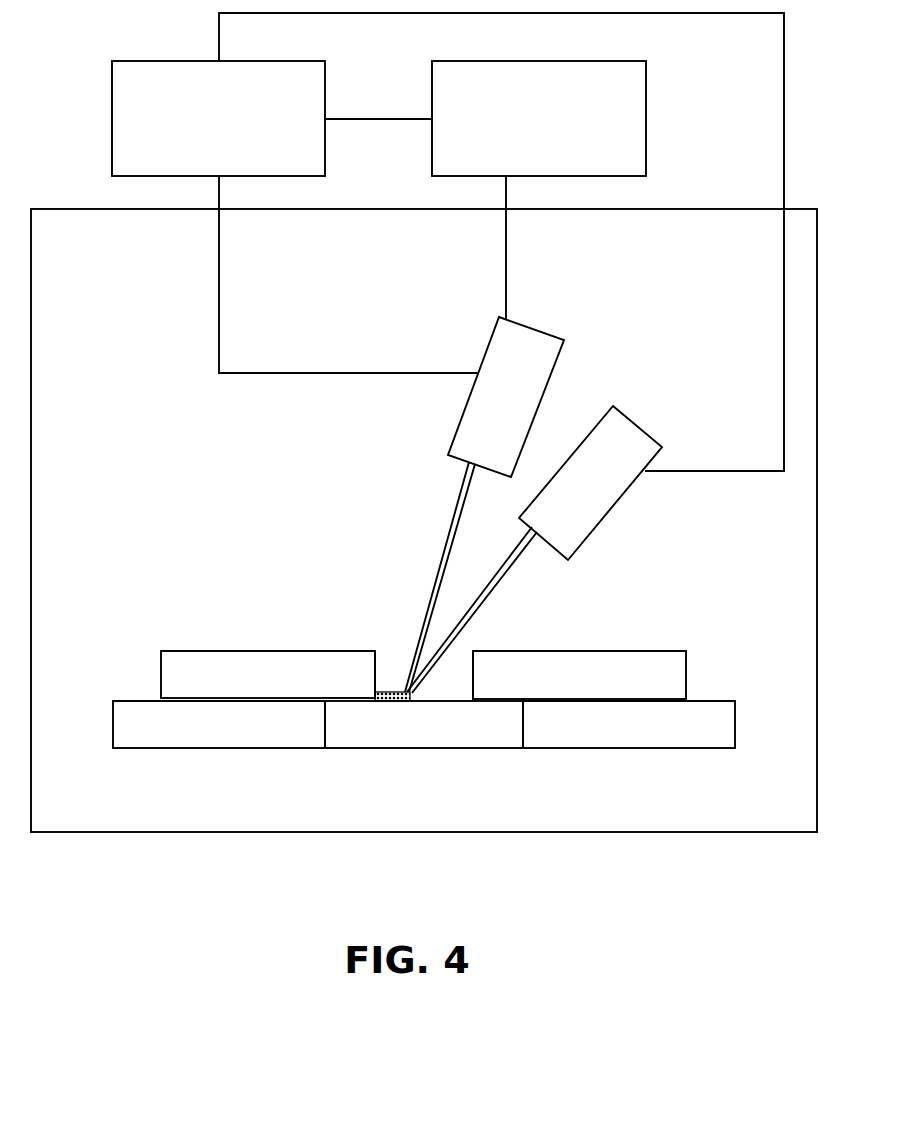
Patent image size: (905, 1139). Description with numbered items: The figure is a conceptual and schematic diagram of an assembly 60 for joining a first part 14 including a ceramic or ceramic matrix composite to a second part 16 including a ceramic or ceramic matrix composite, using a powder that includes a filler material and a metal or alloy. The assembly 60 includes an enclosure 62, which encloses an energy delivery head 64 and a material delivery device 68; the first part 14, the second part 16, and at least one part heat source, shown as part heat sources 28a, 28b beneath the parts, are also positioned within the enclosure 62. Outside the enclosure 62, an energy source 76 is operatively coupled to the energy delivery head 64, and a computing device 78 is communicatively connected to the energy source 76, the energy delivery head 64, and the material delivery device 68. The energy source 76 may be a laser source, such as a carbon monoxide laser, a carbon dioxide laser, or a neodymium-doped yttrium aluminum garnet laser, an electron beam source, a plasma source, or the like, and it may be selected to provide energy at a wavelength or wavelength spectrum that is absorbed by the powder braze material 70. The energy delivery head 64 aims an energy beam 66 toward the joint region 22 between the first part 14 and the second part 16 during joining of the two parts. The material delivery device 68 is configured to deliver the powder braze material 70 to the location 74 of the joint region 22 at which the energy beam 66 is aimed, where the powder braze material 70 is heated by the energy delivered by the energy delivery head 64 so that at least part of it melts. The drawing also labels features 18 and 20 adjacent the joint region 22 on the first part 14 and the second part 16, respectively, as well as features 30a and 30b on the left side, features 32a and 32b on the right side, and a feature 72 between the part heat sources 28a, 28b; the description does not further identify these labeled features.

The assembly 60 is at (100, 186).
The enclosure 62 is at (705, 209).
The energy delivery head 64 is at (549, 348).
The energy beam 66 is at (450, 530).
The material delivery device 68 is at (653, 447).
The powder braze material 70 is at (528, 563).
The energy source 76 is at (539, 118).
The computing device 78 is at (218, 118).
The first part 14 is at (161, 677).
The second part 16 is at (686, 677).
The first joining surface 18 is at (373, 674).
The second joining surface 20 is at (474, 675).
The joint region 22 is at (394, 636).
The part heat source 28a is at (122, 725).
The part heat source 28b is at (718, 723).
The top surface of first component 30a is at (220, 651).
The top surface of first support plate 30b is at (217, 701).
The top surface of second component 32a is at (647, 650).
The top surface of second support plate 32b is at (653, 701).
The middle support section 72 is at (503, 740).
The location 74 is at (413, 701).